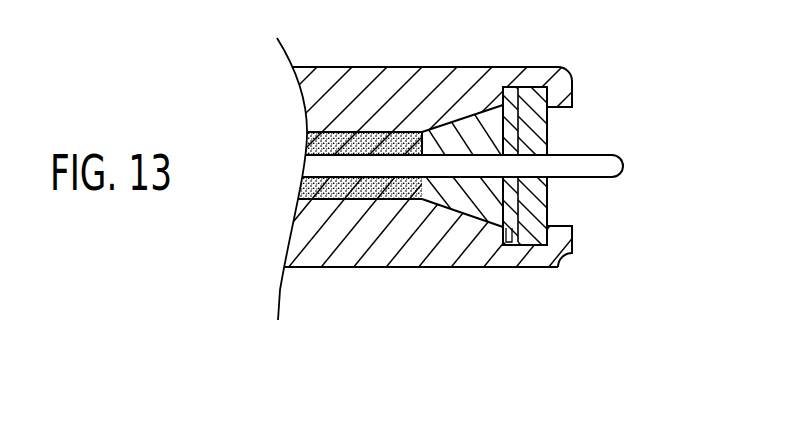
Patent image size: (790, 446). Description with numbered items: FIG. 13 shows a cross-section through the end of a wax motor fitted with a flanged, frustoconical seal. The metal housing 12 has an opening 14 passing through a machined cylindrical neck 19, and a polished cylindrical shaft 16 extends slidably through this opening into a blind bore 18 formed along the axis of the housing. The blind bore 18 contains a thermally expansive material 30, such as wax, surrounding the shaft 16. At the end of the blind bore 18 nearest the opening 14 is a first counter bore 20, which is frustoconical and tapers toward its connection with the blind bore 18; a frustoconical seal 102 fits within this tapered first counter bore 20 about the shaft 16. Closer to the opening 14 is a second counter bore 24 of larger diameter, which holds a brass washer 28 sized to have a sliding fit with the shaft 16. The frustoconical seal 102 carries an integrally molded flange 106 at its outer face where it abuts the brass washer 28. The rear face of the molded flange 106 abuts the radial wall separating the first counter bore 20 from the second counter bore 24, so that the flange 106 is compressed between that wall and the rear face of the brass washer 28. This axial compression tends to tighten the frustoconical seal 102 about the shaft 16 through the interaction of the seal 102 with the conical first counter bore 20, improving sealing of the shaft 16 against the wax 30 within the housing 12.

The metal housing 12 is at (352, 84).
The opening 14 is at (610, 102).
The shaft 16 is at (603, 178).
The blind bore 18 is at (316, 150).
The cylindrical neck 19 is at (595, 267).
The first counter bore 20 is at (483, 116).
The second counter bore 24 is at (523, 86).
The brass washer 28 is at (549, 135).
The thermally expansive material 30 is at (305, 223).
The frustoconical seal 102 is at (431, 196).
The molded flange 106 is at (506, 246).